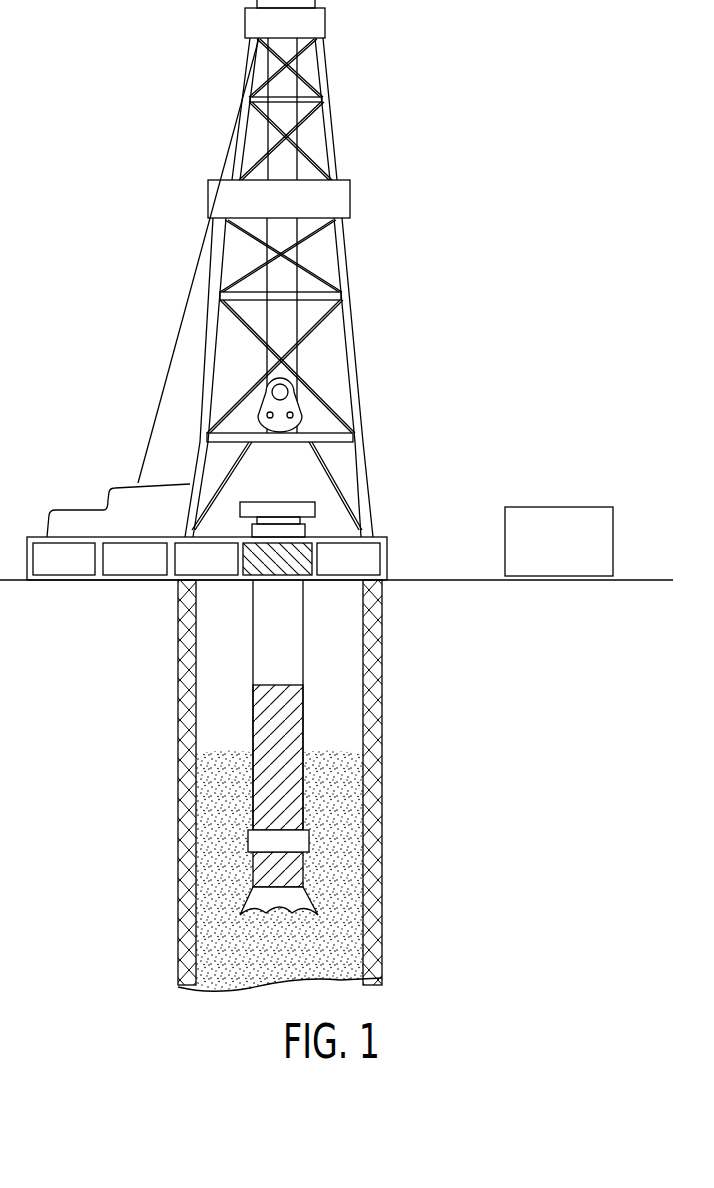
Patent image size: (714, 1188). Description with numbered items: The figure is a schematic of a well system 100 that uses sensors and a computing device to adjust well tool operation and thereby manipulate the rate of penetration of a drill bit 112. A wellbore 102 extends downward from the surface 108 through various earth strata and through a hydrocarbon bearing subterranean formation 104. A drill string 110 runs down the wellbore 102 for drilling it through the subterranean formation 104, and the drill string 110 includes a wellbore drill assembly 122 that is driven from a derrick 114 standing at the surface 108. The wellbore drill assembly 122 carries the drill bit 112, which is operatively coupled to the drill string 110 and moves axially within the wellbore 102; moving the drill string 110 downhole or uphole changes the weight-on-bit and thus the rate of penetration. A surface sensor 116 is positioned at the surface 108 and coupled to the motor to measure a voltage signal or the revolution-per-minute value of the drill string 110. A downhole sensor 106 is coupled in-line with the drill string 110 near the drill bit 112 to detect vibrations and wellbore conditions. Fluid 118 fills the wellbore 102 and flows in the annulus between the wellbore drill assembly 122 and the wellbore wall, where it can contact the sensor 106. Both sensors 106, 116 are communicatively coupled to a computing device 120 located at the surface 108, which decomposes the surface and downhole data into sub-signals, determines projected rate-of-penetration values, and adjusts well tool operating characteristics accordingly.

The well system 100 is at (492, 242).
The wellbore 102 is at (365, 787).
The subterranean formation 104 is at (380, 877).
The sensor 106 is at (309, 842).
The surface 108 is at (482, 580).
The drill string 110 is at (253, 648).
The drill bit 112 is at (250, 903).
The derrick 114 is at (317, 510).
The sensor 116 is at (250, 541).
The fluid 118 is at (323, 953).
The computing device 120 is at (560, 507).
The wellbore drill assembly 122 is at (305, 720).